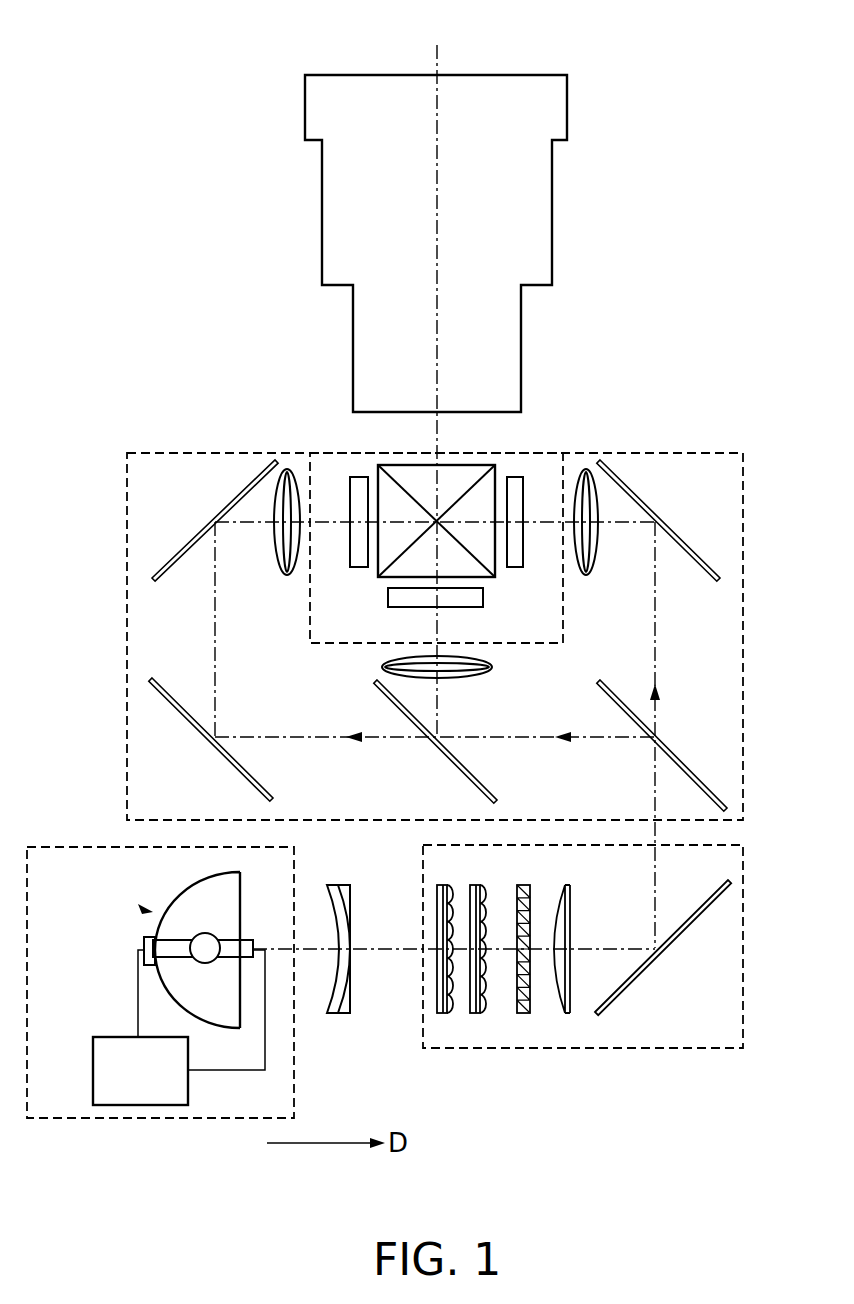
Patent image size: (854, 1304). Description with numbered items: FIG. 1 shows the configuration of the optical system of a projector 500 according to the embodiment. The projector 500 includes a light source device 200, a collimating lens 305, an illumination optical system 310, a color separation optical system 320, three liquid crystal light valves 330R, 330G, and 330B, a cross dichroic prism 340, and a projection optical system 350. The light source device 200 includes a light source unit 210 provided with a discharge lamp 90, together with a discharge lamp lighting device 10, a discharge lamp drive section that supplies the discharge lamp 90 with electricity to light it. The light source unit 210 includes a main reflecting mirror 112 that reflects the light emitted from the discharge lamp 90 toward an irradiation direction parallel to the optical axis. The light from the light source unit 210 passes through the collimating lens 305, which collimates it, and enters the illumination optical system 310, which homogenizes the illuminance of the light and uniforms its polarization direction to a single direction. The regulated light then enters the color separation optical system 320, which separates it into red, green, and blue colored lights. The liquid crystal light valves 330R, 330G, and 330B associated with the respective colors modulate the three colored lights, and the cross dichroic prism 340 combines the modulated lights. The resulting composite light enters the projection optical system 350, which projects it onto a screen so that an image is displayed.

The projector 500 is at (703, 45).
The projection optical system 350 is at (552, 215).
The cross dichroic prism 340 is at (380, 465).
The liquid crystal light valve 330B is at (358, 567).
The liquid crystal light valve 330R is at (512, 477).
The liquid crystal light valve 330G is at (453, 607).
The color separation optical system 320 is at (486, 616).
The illumination optical system 310 is at (743, 1008).
The collimating lens 305 is at (390, 952).
The light source device 200 is at (90, 1120).
The light source unit 210 is at (145, 909).
The main reflecting mirror 112 is at (180, 898).
The discharge lamp 90 is at (250, 940).
The discharge lamp lighting device 10 is at (93, 1070).